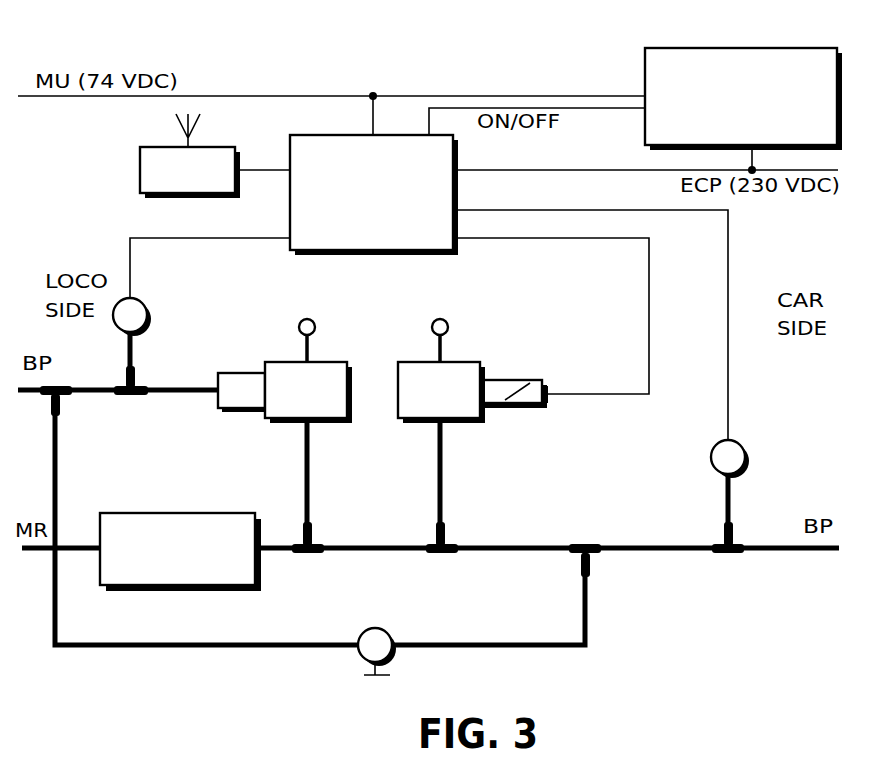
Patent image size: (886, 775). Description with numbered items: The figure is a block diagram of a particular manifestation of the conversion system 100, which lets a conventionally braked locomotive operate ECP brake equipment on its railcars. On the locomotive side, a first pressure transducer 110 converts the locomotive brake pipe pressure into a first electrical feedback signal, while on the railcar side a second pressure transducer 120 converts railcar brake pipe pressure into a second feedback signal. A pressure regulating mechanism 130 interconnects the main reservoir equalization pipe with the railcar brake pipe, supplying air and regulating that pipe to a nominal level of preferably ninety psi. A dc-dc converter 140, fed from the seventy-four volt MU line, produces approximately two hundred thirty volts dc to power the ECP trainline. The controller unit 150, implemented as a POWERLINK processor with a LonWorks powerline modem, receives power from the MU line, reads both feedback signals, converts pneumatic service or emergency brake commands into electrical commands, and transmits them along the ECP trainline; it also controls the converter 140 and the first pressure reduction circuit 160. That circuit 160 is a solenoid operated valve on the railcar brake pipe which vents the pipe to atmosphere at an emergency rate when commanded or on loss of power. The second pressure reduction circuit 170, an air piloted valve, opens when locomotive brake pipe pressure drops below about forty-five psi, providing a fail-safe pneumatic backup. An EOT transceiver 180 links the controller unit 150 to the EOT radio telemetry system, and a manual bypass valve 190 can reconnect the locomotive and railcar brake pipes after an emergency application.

The conversion system 100 is at (610, 578).
The first pressure transducer 110 is at (148, 304).
The second pressure transducer 120 is at (746, 452).
The pressure regulating mechanism 130 is at (145, 513).
The dc-dc converter 140 is at (747, 48).
The controller unit 150 is at (158, 212).
The first pressure reduction circuit 160 is at (462, 353).
The second pressure reduction circuit 170 is at (333, 352).
The EOT transceiver 180 is at (215, 147).
The manual bypass valve 190 is at (362, 652).